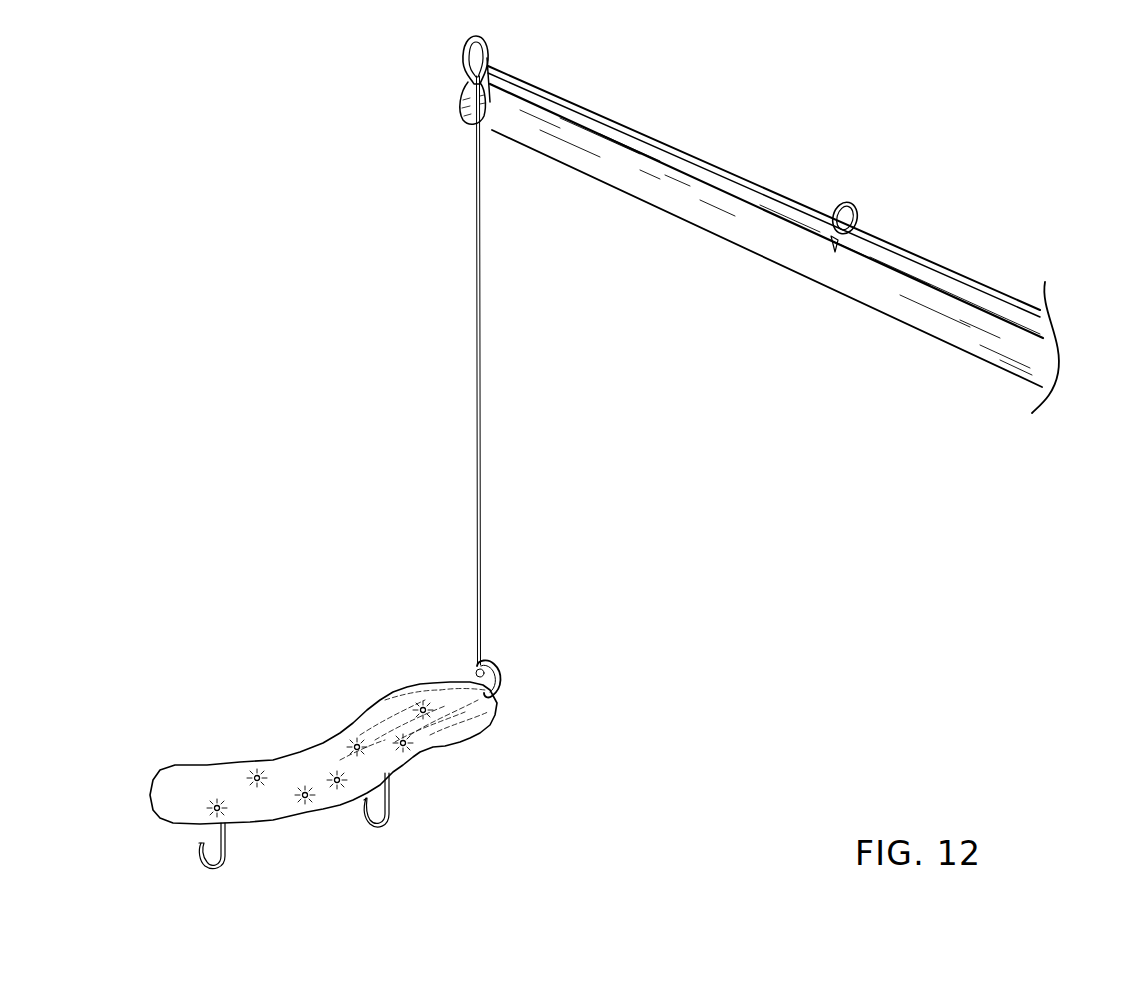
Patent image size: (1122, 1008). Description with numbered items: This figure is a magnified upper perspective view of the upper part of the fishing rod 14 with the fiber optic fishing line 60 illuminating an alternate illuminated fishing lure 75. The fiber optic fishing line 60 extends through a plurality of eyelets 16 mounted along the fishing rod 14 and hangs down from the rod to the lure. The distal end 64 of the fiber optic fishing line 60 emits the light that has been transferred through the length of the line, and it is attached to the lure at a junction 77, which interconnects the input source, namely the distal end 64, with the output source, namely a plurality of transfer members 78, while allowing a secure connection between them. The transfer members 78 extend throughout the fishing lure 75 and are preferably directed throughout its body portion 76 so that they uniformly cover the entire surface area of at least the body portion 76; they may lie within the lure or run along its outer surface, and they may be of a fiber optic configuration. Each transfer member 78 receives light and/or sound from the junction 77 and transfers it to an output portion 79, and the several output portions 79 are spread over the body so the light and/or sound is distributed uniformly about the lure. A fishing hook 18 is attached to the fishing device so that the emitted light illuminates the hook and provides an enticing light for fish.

The fishing rod 14 is at (677, 207).
The eyelets 16 is at (486, 52).
The fiber optic fishing line 60 is at (480, 428).
The distal end 64 is at (490, 693).
The illuminated fishing lure 75 is at (407, 770).
The body portion 76 is at (280, 807).
The junction 77 is at (490, 703).
The transfer members 78 is at (371, 770).
The output portion 79 is at (257, 778).
The fishing hook 18 is at (380, 823).